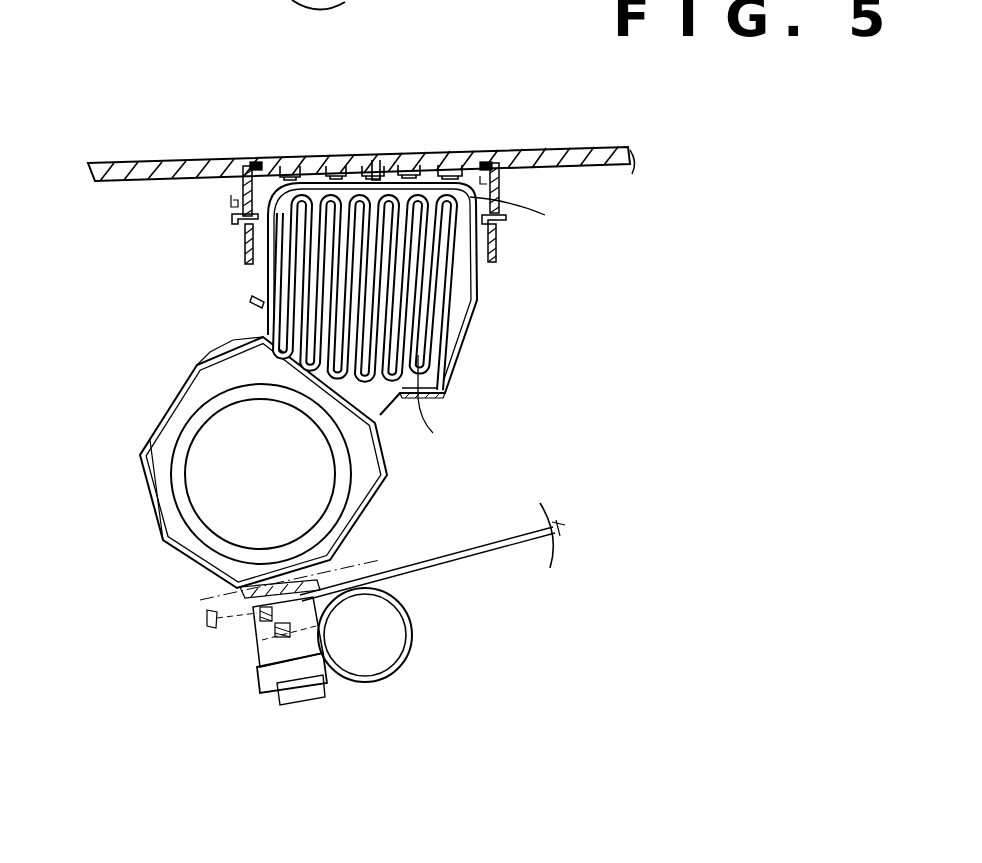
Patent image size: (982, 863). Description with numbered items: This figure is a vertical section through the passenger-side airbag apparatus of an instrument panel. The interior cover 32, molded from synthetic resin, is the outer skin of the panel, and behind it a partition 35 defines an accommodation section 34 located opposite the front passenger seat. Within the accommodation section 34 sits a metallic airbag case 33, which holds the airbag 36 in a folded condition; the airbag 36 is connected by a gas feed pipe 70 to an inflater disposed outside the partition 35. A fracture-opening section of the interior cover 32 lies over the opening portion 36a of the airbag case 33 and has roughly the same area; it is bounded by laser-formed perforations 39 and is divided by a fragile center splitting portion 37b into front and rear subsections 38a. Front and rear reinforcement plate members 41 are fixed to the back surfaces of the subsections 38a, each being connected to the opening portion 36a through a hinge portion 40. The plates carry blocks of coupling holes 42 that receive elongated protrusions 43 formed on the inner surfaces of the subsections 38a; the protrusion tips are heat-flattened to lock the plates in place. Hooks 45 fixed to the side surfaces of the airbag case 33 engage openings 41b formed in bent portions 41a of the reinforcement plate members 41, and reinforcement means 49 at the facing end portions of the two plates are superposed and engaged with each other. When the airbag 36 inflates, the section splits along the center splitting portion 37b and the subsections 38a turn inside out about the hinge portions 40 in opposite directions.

The interior cover 32 is at (572, 147).
The airbag case 33 is at (462, 364).
The accommodation section 34 is at (561, 560).
The partition 35 is at (496, 556).
The airbag 36 is at (438, 411).
The opening portion 36a is at (508, 194).
The center splitting portion 37b is at (378, 158).
The subsections 38a is at (342, 152).
The perforations 39 is at (253, 160).
The hinge portion 40 is at (503, 180).
The reinforcement plate members 41 is at (240, 185).
The bent portions 41a is at (248, 274).
The openings 41b is at (237, 217).
The coupling holes 42 is at (288, 160).
The elongated protrusions 43 is at (312, 158).
The hooks 45 is at (243, 250).
The reinforcement means 49 is at (375, 178).
The gas feed pipe 70 is at (387, 643).